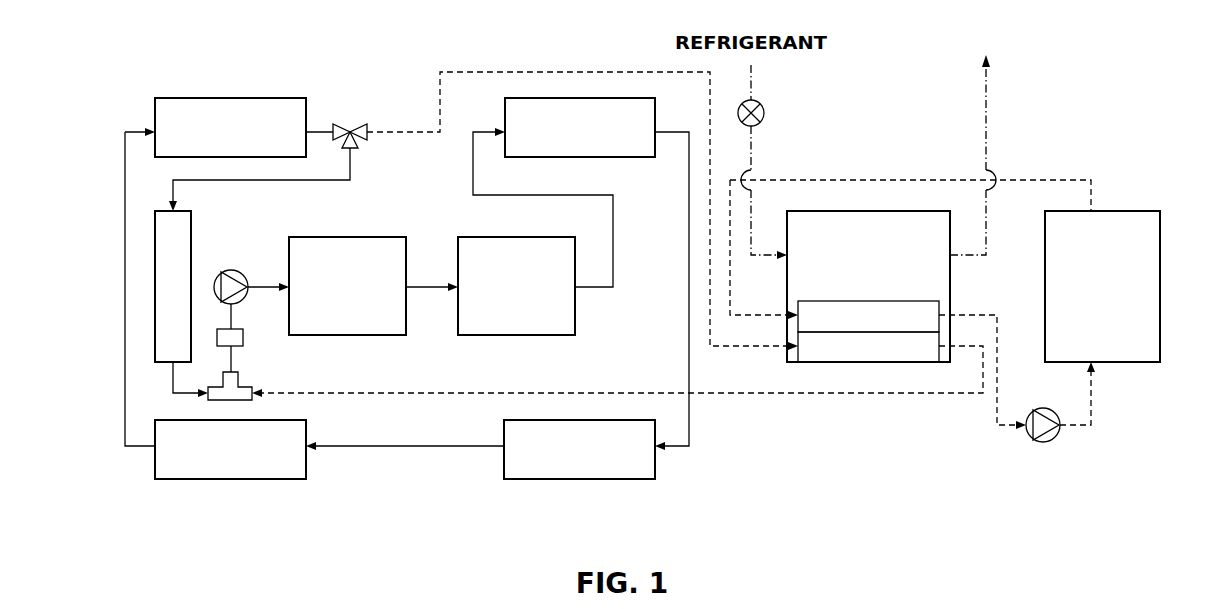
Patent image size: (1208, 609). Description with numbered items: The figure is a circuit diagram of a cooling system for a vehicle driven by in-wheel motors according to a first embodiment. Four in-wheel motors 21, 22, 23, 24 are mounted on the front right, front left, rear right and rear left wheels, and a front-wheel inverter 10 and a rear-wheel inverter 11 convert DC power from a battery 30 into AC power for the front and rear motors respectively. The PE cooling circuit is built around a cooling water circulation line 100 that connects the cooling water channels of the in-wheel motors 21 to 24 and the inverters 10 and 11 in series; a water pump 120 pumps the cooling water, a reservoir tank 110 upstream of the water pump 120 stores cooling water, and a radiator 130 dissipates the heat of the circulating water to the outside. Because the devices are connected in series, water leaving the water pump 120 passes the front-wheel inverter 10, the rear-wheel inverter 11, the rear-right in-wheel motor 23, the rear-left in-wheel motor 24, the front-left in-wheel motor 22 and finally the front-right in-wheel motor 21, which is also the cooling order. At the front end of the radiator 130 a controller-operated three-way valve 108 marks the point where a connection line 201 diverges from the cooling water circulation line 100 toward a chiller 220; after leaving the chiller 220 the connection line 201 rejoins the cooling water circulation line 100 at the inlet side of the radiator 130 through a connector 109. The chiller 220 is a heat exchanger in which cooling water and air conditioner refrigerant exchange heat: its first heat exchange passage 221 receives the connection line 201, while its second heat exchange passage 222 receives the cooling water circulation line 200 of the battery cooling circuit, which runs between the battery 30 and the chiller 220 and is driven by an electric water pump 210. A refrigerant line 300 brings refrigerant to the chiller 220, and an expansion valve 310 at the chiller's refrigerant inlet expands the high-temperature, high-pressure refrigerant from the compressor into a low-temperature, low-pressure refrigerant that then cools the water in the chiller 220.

The front-wheel inverter 10 is at (406, 315).
The rear-wheel inverter 11 is at (575, 320).
The in-wheel motor 21 is at (222, 97).
The in-wheel motor 22 is at (240, 480).
The in-wheel motor 23 is at (613, 98).
The in-wheel motor 24 is at (577, 480).
The battery 30 is at (1137, 211).
The cooling water circulation line 100 is at (192, 180).
The 3-way valve 108 is at (352, 127).
The connector 109 is at (214, 401).
The reservoir tank 110 is at (243, 338).
The water pump 120 is at (237, 270).
The radiator 130 is at (155, 315).
The cooling water circulation line 200 is at (1025, 180).
The connection line 201 is at (513, 72).
The water pump 210 is at (1052, 442).
The chiller 220 is at (950, 287).
The first heat exchange passage 221 is at (842, 345).
The second heat exchange passage 222 is at (822, 320).
The refrigerant line 300 is at (752, 92).
The expansion valve 310 is at (765, 113).